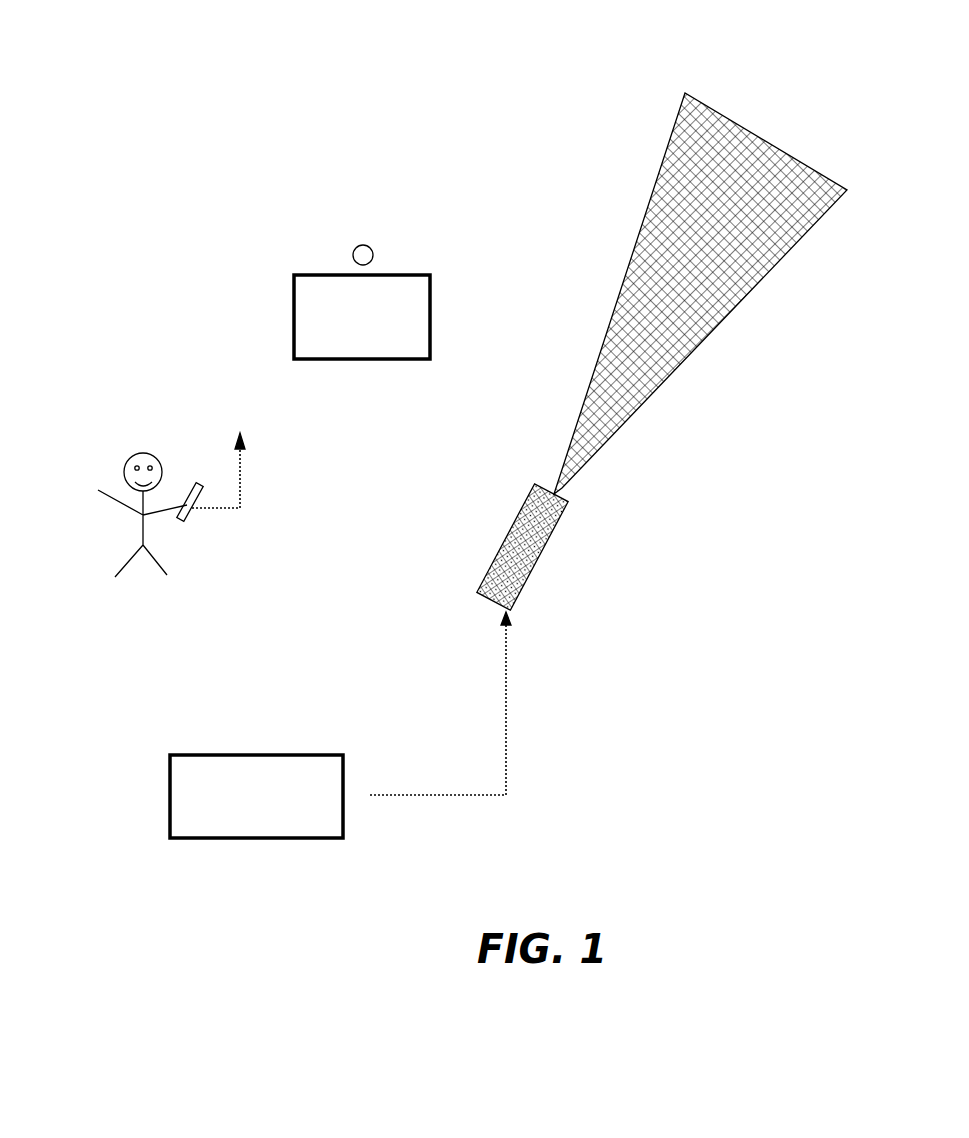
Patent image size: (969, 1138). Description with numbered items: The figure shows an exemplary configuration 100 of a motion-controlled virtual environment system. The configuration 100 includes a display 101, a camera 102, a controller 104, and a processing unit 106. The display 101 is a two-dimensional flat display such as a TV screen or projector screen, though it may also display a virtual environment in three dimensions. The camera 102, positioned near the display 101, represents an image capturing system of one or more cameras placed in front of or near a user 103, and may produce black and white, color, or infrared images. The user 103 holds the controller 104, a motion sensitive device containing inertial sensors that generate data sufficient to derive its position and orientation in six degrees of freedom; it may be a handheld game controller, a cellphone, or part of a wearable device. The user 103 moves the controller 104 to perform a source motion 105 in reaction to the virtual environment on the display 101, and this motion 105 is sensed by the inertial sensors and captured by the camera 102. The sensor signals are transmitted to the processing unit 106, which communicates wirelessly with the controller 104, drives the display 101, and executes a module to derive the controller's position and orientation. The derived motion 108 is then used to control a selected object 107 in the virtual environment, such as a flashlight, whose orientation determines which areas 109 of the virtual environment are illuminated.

The configuration 100 is at (118, 218).
The display 101 is at (295, 277).
The camera 102 is at (356, 248).
The user 103 is at (130, 459).
The controller 104 is at (185, 522).
The source motion 105 is at (237, 434).
The processing unit 106 is at (170, 755).
The selected object 107 is at (495, 522).
The derived motion 108 is at (505, 735).
The illuminated areas 109 is at (683, 92).